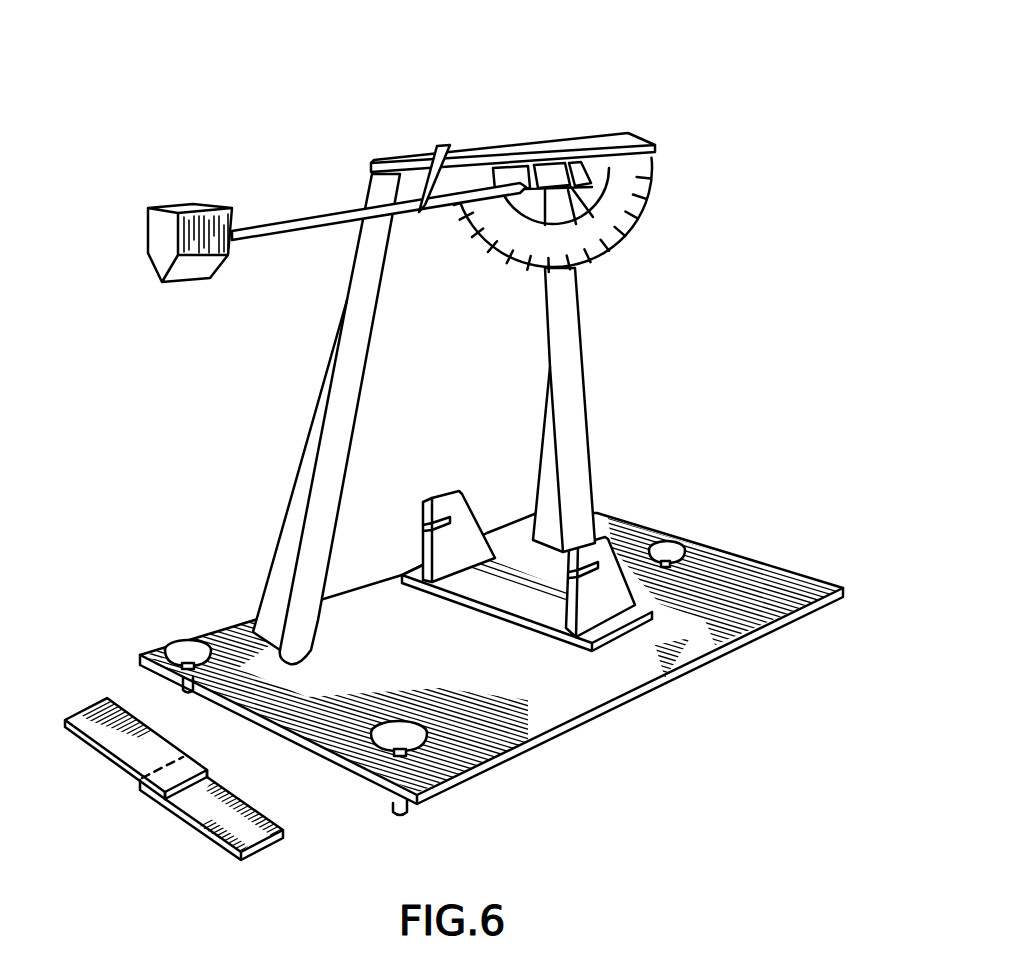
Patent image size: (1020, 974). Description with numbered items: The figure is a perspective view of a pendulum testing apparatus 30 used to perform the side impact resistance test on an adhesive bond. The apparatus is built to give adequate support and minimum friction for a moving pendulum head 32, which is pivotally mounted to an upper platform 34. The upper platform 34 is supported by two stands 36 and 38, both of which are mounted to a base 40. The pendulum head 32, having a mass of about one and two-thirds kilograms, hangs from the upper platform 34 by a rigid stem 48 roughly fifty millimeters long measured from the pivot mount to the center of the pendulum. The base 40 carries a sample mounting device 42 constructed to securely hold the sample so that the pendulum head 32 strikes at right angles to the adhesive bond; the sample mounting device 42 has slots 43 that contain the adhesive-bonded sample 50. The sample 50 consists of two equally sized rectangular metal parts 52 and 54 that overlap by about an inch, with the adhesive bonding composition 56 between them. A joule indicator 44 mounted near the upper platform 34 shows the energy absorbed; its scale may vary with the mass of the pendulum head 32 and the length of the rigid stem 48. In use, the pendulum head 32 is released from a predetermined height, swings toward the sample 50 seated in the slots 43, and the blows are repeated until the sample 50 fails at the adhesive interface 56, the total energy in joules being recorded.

The pendulum testing apparatus 30 is at (437, 494).
The pendulum head 32 is at (185, 275).
The upper platform 34 is at (560, 138).
The stand 36 is at (363, 357).
The stand 38 is at (570, 350).
The base 40 is at (524, 722).
The sample mounting device 42 is at (632, 616).
The slots 43 is at (428, 524).
The joule indicator 44 is at (648, 204).
The rigid stem 48 is at (297, 212).
The adhesive-bonded sample 50 is at (184, 775).
The rectangular metal part 52 is at (105, 730).
The rectangular metal part 54 is at (240, 813).
The adhesive bonding composition 56 is at (177, 805).